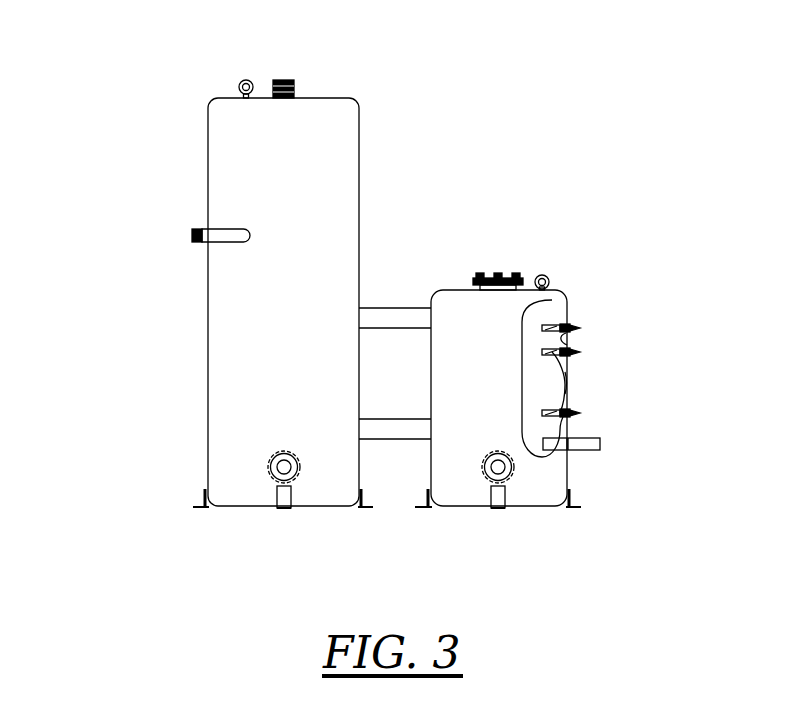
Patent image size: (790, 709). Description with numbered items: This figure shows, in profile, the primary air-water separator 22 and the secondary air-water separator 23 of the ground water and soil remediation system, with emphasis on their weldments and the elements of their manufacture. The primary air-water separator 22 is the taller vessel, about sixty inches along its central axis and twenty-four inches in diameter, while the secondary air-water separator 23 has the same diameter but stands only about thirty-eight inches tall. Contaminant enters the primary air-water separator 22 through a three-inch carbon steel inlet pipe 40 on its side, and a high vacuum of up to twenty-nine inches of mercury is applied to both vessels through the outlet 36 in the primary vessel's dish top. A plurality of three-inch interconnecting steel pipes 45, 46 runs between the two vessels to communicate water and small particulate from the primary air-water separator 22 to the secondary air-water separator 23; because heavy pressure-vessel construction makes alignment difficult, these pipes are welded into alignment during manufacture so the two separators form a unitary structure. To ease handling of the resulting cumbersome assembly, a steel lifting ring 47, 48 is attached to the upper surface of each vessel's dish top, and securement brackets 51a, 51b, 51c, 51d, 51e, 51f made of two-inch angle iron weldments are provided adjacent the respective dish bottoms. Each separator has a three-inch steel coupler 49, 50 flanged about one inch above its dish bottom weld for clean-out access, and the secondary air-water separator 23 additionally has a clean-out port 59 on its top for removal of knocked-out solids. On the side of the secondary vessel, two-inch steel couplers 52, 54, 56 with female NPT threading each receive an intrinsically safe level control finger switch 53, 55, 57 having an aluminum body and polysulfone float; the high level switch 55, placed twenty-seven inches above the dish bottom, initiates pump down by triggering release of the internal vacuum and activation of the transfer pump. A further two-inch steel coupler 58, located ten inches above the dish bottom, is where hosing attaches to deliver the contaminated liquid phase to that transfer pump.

The primary air-water separator 22 is at (340, 126).
The secondary air-water separator 23 is at (447, 303).
The outlet 36 is at (287, 92).
The inlet pipe 40 is at (242, 238).
The interconnecting steel pipe 45 is at (393, 320).
The interconnecting steel pipe 46 is at (390, 430).
The steel lifting ring 47 is at (243, 82).
The steel lifting ring 48 is at (549, 283).
The steel coupler 49 is at (260, 458).
The steel coupler 50 is at (486, 458).
The securement bracket 51a is at (200, 505).
The securement bracket 51b is at (284, 508).
The securement bracket 51c is at (365, 508).
The securement bracket 51d is at (420, 508).
The securement bracket 51e is at (497, 508).
The securement bracket 51f is at (576, 508).
The steel coupler 52 is at (580, 327).
The level control finger switch 53 is at (556, 313).
The steel coupler 54 is at (578, 352).
The high level switch 55 is at (568, 380).
The steel coupler 56 is at (580, 413).
The level control finger switch 57 is at (575, 437).
The steel coupler 58 is at (577, 450).
The clean-out port 59 is at (487, 272).